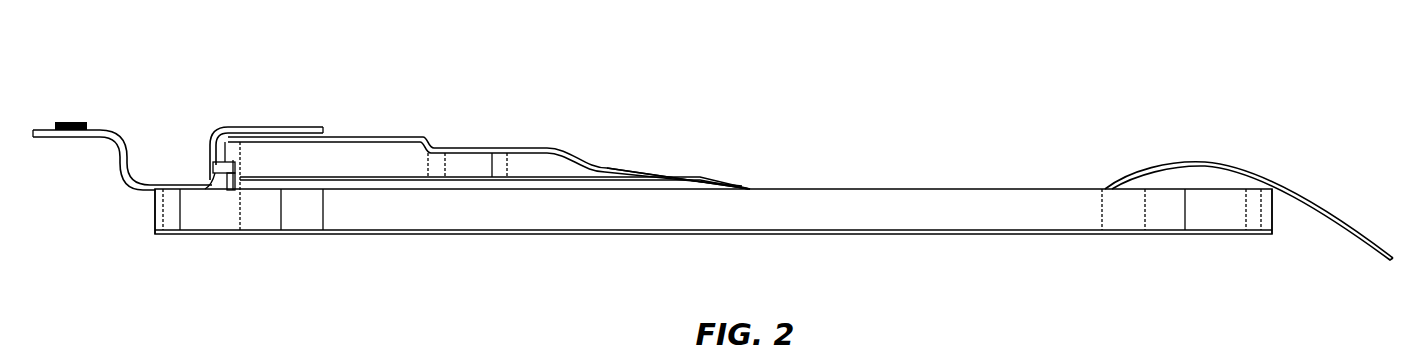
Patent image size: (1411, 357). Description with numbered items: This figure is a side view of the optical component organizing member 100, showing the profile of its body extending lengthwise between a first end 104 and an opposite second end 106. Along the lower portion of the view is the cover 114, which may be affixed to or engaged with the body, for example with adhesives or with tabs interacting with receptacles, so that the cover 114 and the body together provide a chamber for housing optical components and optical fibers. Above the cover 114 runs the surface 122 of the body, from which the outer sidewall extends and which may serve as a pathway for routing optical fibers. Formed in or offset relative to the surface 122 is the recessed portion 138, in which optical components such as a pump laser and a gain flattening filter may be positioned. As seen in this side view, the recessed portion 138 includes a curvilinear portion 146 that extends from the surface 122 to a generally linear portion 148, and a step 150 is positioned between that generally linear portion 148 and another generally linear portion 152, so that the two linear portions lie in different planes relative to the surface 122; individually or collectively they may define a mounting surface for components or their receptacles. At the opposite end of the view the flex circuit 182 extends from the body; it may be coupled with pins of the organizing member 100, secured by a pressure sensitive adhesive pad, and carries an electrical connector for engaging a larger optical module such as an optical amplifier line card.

The optical component organizing member 100 is at (1329, 67).
The first end 104 is at (1272, 220).
The second end 106 is at (155, 220).
The cover 114 is at (923, 234).
The surface 122 is at (923, 189).
The recessed portion 138 is at (429, 121).
The curvilinear portion 146 is at (605, 167).
The generally linear portion 148 is at (498, 148).
The step 150 is at (432, 147).
The generally linear portion 152 is at (373, 137).
The flex circuit 182 is at (123, 121).